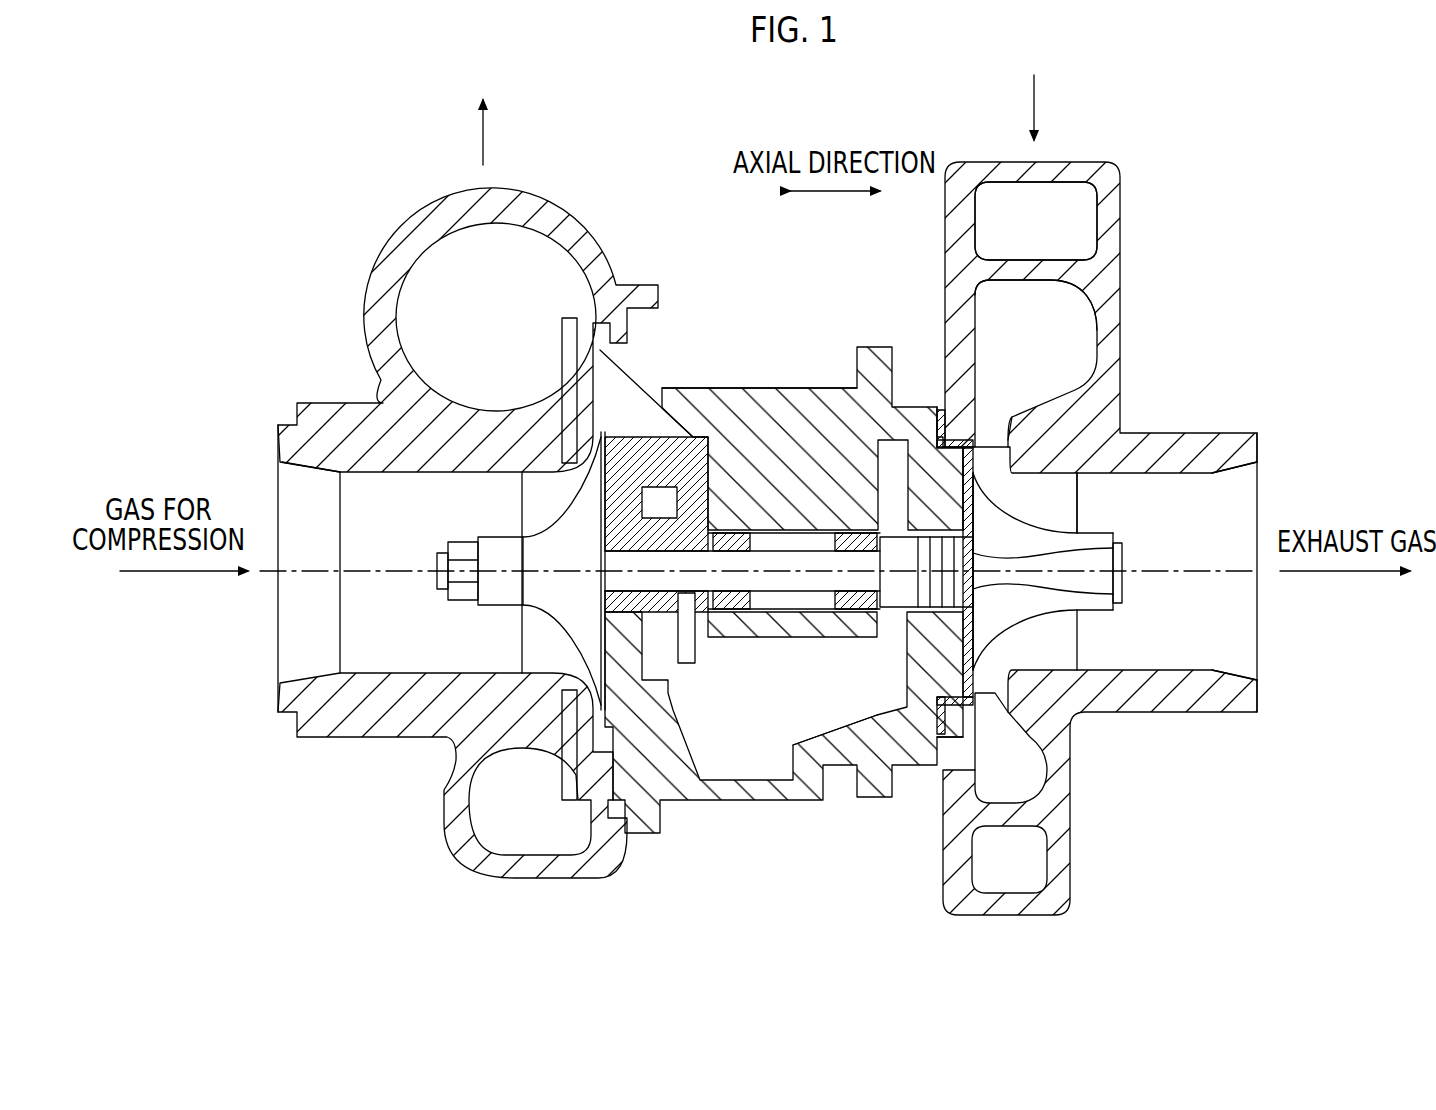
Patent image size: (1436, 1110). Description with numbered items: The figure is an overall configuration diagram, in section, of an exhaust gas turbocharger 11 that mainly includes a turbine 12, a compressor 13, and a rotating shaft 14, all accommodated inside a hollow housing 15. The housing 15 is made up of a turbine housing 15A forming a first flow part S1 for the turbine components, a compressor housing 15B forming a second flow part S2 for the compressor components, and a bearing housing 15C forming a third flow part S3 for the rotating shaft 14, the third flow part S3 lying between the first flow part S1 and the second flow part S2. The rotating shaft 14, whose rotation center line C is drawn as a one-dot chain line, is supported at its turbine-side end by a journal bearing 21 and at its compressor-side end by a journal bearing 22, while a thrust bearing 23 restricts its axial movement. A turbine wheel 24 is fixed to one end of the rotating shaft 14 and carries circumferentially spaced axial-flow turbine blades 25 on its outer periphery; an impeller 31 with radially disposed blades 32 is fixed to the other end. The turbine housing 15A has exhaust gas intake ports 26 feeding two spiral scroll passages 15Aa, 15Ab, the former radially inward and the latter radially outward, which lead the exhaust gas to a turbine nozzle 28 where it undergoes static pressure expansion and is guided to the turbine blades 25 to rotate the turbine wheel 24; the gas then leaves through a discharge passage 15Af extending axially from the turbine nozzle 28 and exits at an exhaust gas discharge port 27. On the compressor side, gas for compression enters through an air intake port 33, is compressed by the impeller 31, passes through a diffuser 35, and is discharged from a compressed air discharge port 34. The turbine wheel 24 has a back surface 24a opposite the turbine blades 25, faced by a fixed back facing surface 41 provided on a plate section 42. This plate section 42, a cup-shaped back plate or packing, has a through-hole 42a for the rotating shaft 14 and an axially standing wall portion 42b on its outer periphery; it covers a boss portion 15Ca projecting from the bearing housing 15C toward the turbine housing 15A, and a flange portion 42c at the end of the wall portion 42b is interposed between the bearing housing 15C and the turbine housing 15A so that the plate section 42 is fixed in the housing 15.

The exhaust gas turbocharger 11 is at (1216, 252).
The turbine 12 is at (1246, 608).
The compressor 13 is at (296, 491).
The rotating shaft 14 is at (788, 592).
The housing 15 is at (688, 380).
The turbine housing 15A is at (1120, 366).
The scroll passage 15Aa is at (1058, 228).
The scroll passage 15Ab is at (1058, 323).
The discharge passage 15Af is at (1243, 500).
The compressor housing 15B is at (383, 248).
The bearing housing 15C is at (787, 386).
The boss portion 15Ca is at (930, 790).
The journal bearing 21 is at (857, 612).
The journal bearing 22 is at (723, 612).
The thrust bearing 23 is at (690, 460).
The turbine wheel 24 is at (1098, 525).
The back surface 24a is at (957, 620).
The turbine blade 25 is at (1070, 510).
The exhaust gas intake port 26 is at (1033, 112).
The exhaust gas discharge port 27 is at (1257, 658).
The turbine nozzle 28 is at (1010, 446).
The impeller 31 is at (500, 546).
The blade 32 is at (528, 630).
The air intake port 33 is at (280, 655).
The compressed air discharge port 34 is at (482, 134).
The diffuser 35 is at (568, 390).
The back facing surface 41 is at (937, 467).
The plate section 42 is at (940, 690).
The through-hole 42a is at (1075, 548).
The wall portion 42b is at (933, 436).
The flange portion 42c is at (852, 738).
The center line C is at (313, 575).
The first flow part S1 is at (1203, 629).
The second flow part S2 is at (390, 648).
The third flow part S3 is at (772, 771).